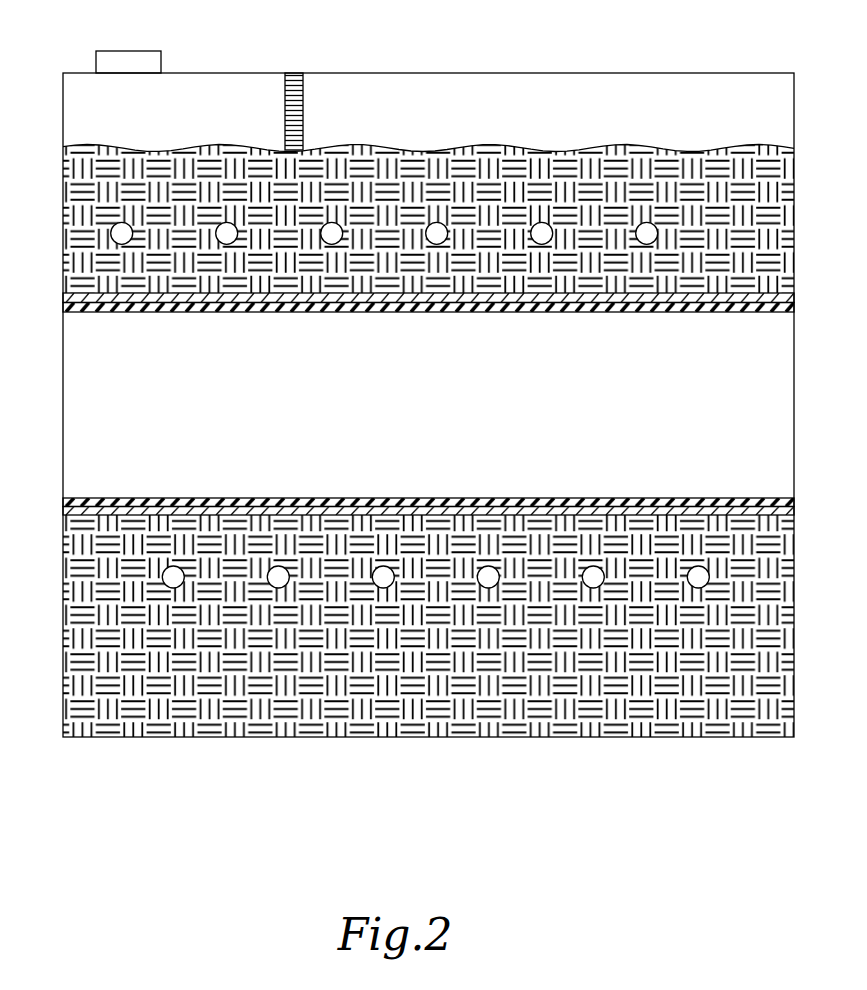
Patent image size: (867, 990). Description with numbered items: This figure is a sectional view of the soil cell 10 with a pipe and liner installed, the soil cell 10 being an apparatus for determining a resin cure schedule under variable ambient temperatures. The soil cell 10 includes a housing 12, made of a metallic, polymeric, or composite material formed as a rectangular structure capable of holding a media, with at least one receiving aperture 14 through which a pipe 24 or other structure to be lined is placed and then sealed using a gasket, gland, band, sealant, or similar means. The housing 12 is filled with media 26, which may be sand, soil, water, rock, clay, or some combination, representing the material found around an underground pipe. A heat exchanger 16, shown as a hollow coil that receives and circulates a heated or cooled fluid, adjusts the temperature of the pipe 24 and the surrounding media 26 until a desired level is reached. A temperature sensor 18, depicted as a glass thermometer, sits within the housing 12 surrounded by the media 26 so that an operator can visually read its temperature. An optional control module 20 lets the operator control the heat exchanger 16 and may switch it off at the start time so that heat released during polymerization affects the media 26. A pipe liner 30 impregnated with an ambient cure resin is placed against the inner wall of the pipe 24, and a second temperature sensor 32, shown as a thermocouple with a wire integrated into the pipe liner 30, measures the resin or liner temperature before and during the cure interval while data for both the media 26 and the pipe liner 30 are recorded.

The soil cell 10 is at (630, 48).
The housing 12 is at (406, 622).
The receiving aperture 14 is at (63, 405).
The heat exchanger 16 is at (123, 222).
The temperature sensor 18 is at (297, 73).
The control module 20 is at (127, 50).
The pipe 24 is at (355, 516).
The media 26 is at (88, 206).
The pipe liner 30 is at (413, 500).
The second temperature sensor 32 is at (100, 500).